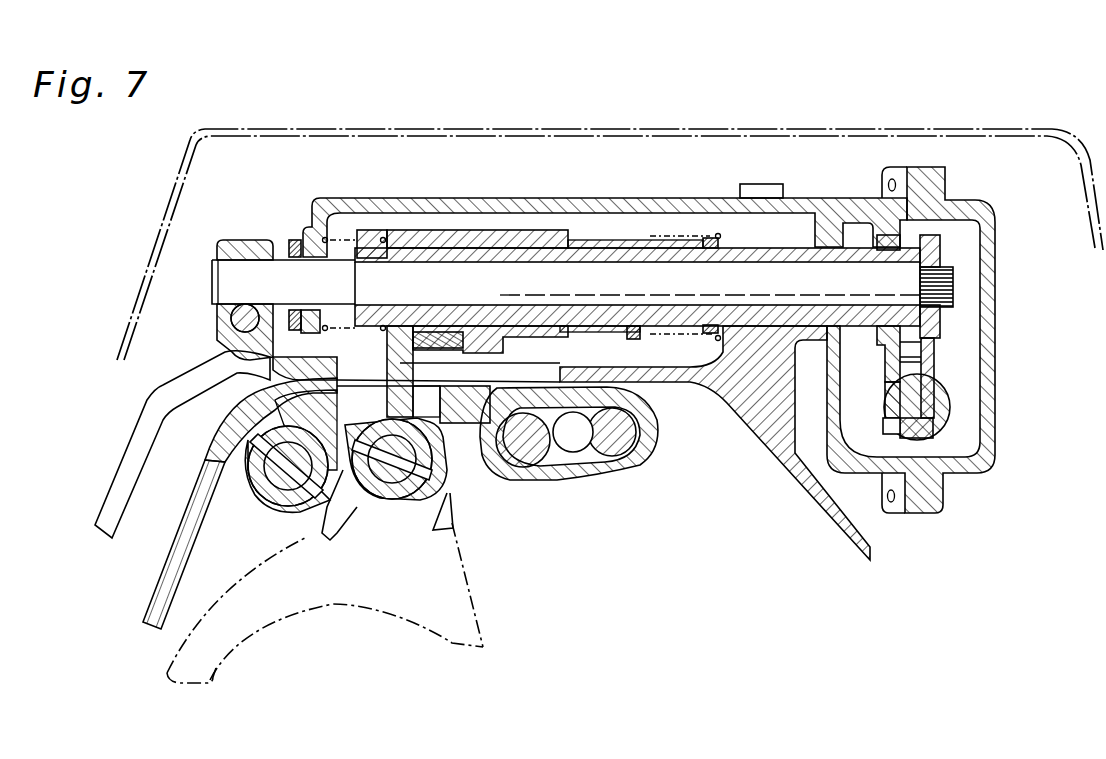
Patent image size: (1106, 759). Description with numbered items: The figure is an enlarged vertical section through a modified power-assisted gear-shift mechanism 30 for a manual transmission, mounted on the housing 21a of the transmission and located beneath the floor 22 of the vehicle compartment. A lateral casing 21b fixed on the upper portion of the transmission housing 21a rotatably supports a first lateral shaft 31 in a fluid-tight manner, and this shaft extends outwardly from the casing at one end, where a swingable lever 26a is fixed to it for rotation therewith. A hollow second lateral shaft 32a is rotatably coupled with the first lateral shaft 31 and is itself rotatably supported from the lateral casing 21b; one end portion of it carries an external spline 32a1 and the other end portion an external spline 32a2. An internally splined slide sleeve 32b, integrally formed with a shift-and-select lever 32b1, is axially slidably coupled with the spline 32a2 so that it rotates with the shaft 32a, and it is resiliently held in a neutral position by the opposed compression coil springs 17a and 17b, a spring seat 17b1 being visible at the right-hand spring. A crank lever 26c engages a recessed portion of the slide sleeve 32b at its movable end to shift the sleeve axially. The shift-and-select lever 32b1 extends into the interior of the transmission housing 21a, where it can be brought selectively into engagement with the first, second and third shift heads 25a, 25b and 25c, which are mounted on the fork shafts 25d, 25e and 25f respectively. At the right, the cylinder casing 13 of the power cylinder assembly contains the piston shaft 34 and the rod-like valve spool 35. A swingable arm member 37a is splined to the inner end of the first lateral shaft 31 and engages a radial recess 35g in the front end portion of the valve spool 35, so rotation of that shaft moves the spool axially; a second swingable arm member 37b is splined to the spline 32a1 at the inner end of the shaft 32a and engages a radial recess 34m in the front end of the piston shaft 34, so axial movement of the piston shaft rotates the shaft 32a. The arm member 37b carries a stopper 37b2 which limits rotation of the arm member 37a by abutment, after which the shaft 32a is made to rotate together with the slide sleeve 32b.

The cylinder casing 13 is at (995, 388).
The compression coil spring 17a is at (350, 233).
The compression coil spring 17b is at (673, 230).
The seal ring 17b1 is at (594, 336).
The transmission housing 21a is at (212, 505).
The lateral casing 21b is at (491, 198).
The floor 22 is at (518, 129).
The first shift head 25a is at (293, 410).
The second shift head 25b is at (420, 415).
The third shift head 25c is at (479, 424).
The fork shaft 25d is at (284, 492).
The fork shaft 25e is at (395, 492).
The fork shaft 25f is at (530, 458).
The swingable lever 26a is at (142, 432).
The crank lever 26c is at (460, 333).
The gear-shift mechanism 30 is at (596, 196).
The first lateral shaft 31 is at (253, 260).
The second lateral shaft 32a is at (796, 249).
The external spline 32a1 is at (879, 243).
The external spline 32a2 is at (380, 240).
The slide sleeve 32b is at (542, 230).
The shift-and-select lever 32b1 is at (393, 405).
The piston shaft 34 is at (942, 406).
The radial recess 34m is at (892, 430).
The valve spool 35 is at (885, 406).
The radial recess 35g is at (933, 428).
The swingable arm member 37a is at (941, 258).
The swingable arm member 37b is at (884, 350).
The stopper 37b2 is at (913, 354).